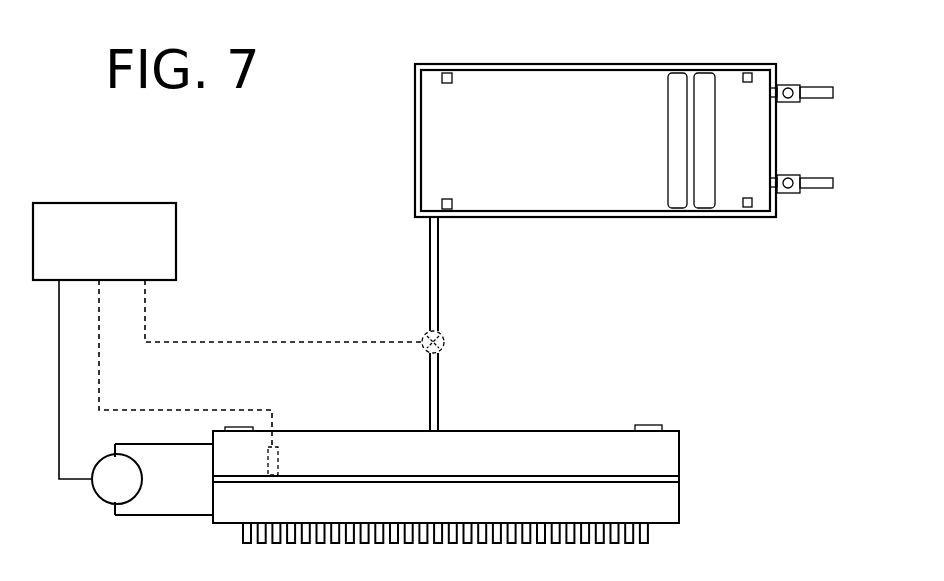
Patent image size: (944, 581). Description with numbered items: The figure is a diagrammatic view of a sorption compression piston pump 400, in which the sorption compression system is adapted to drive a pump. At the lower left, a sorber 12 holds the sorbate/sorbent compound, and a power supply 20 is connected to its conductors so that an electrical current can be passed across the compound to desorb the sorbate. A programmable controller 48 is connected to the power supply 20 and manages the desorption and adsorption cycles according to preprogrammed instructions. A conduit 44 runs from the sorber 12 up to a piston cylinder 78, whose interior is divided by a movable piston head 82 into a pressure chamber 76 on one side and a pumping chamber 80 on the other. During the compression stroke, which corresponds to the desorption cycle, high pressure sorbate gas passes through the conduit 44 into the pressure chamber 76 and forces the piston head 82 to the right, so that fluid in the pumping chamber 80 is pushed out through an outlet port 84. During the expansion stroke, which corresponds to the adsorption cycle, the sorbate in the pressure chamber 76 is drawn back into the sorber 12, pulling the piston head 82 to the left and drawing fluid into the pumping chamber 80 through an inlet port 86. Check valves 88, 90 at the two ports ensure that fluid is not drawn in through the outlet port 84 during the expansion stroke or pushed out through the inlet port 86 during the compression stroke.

The sorber 12 is at (531, 426).
The power supply 20 is at (100, 500).
The conduit 44 is at (438, 283).
The programmable controller 48 is at (88, 255).
The pressure chamber 76 is at (534, 152).
The piston cylinder 78 is at (574, 217).
The pumping chamber 80 is at (746, 146).
The piston head 82 is at (677, 195).
The outlet port 84 is at (775, 90).
The inlet port 86 is at (771, 190).
The check valve 88 is at (790, 86).
The check valve 90 is at (797, 196).
The sorption compression piston pump 400 is at (755, 386).